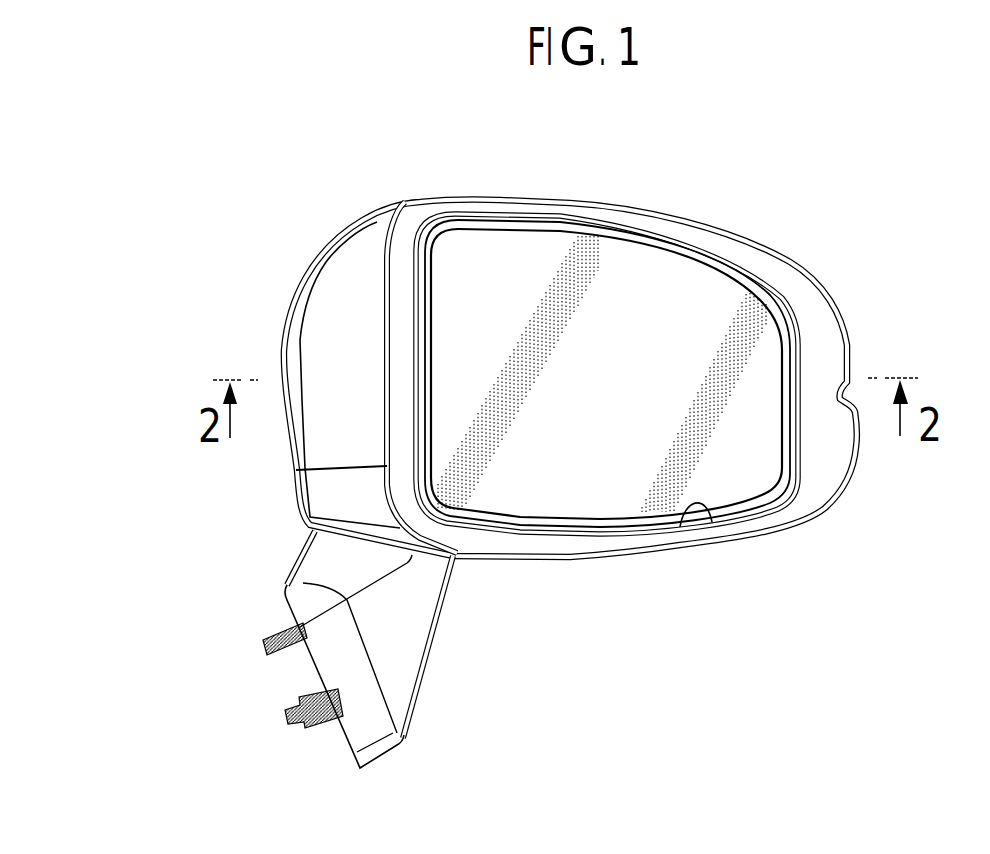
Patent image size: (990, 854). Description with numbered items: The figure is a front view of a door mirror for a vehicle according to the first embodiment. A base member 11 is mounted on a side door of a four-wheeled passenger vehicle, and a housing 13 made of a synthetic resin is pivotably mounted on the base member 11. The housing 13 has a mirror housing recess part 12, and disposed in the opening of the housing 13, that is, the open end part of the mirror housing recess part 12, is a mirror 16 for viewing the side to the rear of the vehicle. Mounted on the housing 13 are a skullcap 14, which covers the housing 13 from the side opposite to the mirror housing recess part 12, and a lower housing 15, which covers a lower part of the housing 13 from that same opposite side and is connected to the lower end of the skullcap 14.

The base member 11 is at (407, 683).
The mirror housing recess part 12 is at (712, 522).
The housing 13 is at (785, 283).
The skullcap 14 is at (358, 263).
The lower housing 15 is at (328, 503).
The mirror 16 is at (598, 362).